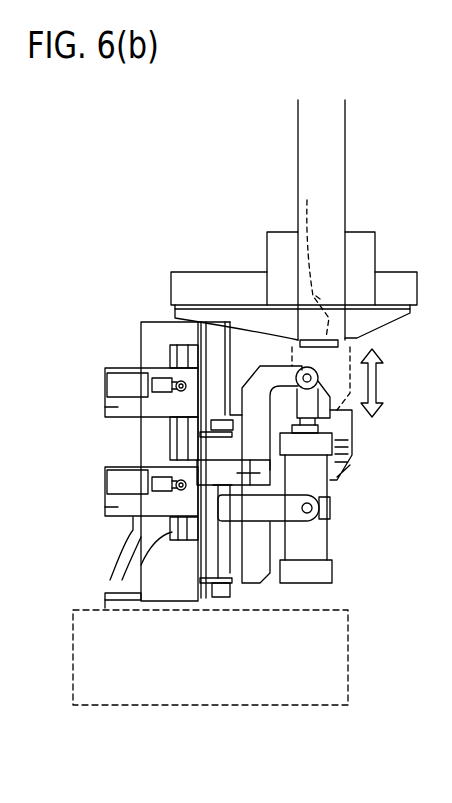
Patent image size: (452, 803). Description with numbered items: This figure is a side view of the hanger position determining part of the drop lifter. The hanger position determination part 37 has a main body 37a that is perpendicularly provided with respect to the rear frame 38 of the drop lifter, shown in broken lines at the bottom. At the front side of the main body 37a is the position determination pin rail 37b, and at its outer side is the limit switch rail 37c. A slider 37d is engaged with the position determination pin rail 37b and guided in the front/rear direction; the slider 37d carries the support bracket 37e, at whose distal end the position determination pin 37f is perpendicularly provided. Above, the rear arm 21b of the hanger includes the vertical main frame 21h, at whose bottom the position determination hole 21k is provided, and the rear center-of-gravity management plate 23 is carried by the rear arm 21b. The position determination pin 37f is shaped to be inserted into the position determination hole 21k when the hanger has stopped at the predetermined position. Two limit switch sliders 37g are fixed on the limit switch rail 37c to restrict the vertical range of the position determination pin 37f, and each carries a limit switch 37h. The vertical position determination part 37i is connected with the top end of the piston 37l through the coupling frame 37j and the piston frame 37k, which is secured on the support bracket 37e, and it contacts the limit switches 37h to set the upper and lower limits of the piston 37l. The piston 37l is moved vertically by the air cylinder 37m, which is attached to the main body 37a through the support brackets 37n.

The rear arm 21b is at (298, 128).
The main frame 21h is at (310, 172).
The position determination hole 21k is at (298, 200).
The piston frame 37k is at (266, 387).
The rear center-of-gravity management plate 23 is at (215, 332).
The position determination pin rail 37b is at (171, 281).
The main body 37a is at (162, 320).
The limit switch 37h is at (171, 377).
The limit switch slider 37g is at (117, 407).
The slider 37d is at (208, 429).
The vertical position determination part 37i is at (184, 476).
The limit switch rail 37c is at (107, 580).
The hanger position determination part 37 is at (382, 389).
The position determination pin 37f is at (330, 410).
The piston 37l is at (320, 424).
The support bracket 37e is at (350, 463).
The coupling frame 37j is at (237, 472).
The air cylinder 37m is at (310, 532).
The support bracket 37n is at (323, 547).
The rear frame 38 is at (173, 682).